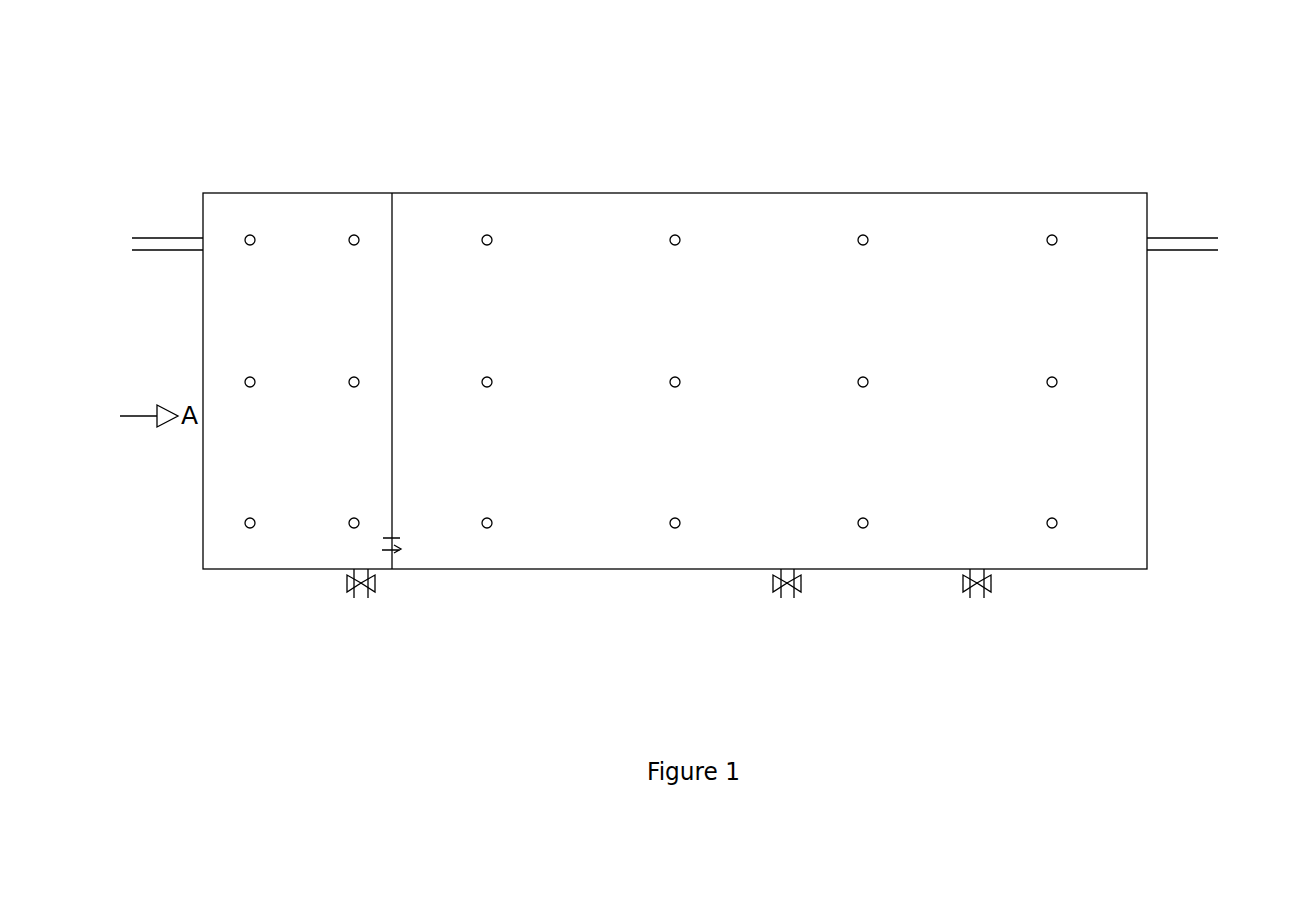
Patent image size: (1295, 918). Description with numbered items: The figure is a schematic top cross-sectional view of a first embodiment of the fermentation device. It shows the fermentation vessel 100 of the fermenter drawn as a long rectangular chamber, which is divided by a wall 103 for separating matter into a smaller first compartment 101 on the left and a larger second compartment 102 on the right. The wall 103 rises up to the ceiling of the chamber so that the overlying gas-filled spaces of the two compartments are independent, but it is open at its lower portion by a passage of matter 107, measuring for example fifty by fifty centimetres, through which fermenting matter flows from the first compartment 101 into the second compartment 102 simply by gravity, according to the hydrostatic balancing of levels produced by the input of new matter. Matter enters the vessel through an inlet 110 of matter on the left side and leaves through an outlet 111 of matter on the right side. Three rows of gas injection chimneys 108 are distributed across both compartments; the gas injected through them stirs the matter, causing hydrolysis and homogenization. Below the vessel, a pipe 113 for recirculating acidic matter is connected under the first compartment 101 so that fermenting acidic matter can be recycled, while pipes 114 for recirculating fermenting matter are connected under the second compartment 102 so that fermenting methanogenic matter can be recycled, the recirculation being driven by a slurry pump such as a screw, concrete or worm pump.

The fermentation vessel 100 is at (878, 569).
The first compartment 101 is at (297, 212).
The second compartment 102 is at (770, 233).
The wall for separating matter 103 is at (390, 203).
The passage of matter 107 is at (392, 569).
The gas injection chimneys 108 is at (863, 240).
The inlet of matter 110 is at (178, 238).
The outlet of matter 111 is at (1190, 242).
The pipe for recirculating acidic matter 113 is at (358, 597).
The pipe for recirculating fermenting matter 114 is at (980, 597).